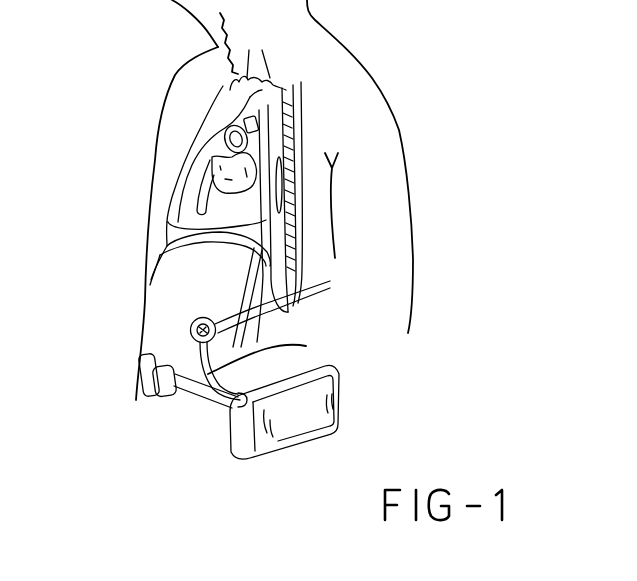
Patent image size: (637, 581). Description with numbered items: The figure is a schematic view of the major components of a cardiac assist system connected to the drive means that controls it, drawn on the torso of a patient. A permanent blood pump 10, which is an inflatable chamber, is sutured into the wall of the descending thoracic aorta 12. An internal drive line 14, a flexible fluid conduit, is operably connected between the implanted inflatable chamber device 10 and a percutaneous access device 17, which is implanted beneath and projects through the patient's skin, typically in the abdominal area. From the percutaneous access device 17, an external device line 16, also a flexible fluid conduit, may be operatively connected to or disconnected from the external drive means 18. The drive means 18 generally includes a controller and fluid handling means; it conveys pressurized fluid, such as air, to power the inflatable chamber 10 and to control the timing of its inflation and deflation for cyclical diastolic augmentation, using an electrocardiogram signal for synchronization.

The blood pump 10 is at (282, 132).
The descending thoracic aorta 12 is at (272, 95).
The internal drive line 14 is at (330, 281).
The external device line 16 is at (306, 346).
The percutaneous access device 17 is at (192, 322).
The drive means 18 is at (336, 381).